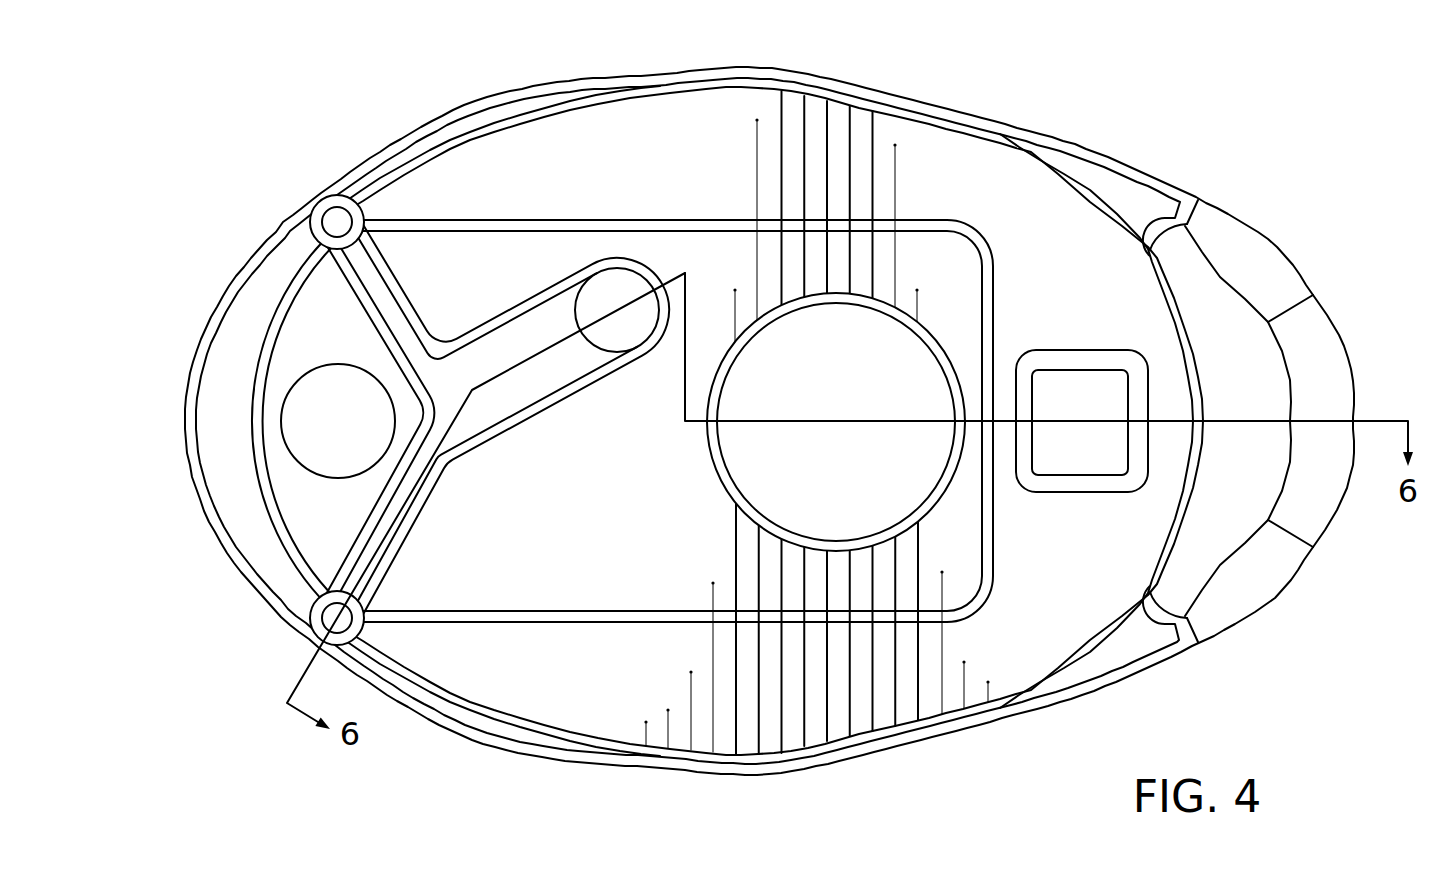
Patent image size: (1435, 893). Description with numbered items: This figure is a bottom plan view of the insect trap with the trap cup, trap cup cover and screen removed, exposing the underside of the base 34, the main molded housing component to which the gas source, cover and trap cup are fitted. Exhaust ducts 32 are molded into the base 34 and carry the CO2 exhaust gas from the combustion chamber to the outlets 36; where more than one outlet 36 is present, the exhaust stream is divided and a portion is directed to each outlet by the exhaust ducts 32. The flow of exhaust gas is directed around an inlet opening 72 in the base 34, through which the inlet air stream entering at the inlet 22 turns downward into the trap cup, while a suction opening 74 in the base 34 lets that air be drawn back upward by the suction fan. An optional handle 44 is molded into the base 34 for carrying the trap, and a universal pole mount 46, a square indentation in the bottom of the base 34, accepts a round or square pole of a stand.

The inlet 22 is at (384, 168).
The exhaust ducts 32 is at (375, 292).
The base 34 is at (943, 148).
The outlets 36 is at (333, 223).
The handle 44 is at (1257, 272).
The universal pole mount 46 is at (1078, 447).
The inlet opening 72 is at (321, 432).
The suction opening 74 is at (820, 486).